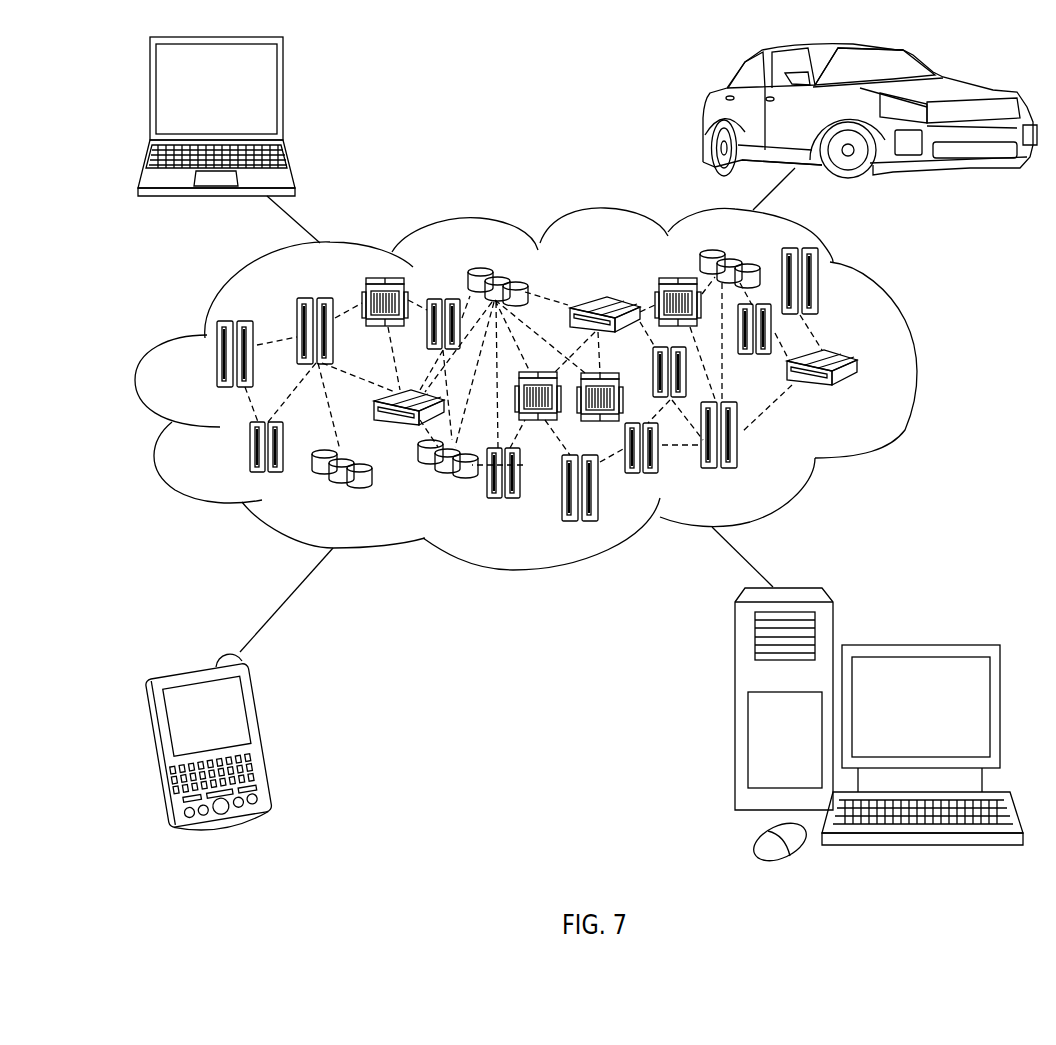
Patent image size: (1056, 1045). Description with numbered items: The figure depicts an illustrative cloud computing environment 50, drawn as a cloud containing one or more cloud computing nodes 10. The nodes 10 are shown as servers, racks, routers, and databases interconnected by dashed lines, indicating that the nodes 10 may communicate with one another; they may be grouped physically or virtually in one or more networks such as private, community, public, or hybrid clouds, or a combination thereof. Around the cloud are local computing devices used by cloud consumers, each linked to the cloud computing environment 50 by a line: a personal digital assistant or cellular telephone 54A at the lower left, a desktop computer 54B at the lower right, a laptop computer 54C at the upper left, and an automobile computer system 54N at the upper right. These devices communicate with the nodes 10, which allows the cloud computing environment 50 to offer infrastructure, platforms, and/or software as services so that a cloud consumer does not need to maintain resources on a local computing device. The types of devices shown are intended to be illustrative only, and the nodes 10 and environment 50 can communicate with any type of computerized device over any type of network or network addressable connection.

The cloud computing node 10 is at (862, 395).
The cloud computing environment 50 is at (554, 389).
The personal digital assistant (PDA) or cellular telephone 54A is at (273, 731).
The desktop computer 54B is at (918, 645).
The laptop computer 54C is at (283, 98).
The automobile computer system 54N is at (703, 116).